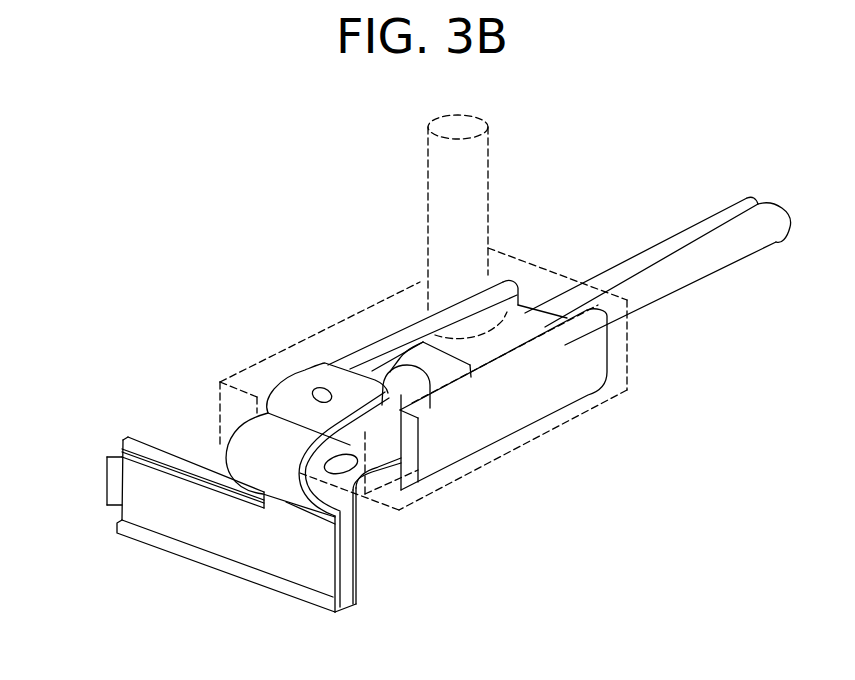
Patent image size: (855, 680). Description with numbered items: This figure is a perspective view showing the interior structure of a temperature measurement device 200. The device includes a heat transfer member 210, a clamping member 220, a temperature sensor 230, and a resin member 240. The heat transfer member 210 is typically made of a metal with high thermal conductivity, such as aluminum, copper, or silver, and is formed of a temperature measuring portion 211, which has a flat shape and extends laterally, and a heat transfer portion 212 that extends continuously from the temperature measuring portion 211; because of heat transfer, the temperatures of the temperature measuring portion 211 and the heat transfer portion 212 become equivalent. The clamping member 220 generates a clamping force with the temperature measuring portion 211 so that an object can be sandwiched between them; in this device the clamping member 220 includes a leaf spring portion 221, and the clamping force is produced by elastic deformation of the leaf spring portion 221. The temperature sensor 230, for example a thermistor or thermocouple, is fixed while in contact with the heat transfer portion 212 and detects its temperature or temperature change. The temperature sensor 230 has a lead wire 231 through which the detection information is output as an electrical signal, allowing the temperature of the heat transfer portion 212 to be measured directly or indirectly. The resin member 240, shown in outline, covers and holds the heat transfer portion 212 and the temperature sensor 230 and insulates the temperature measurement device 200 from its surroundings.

The temperature measurement device 200 is at (465, 662).
The heat transfer member 210 is at (358, 531).
The temperature measuring portion 211 is at (357, 565).
The heat transfer portion 212 is at (468, 426).
The clamping member 220 is at (107, 465).
The leaf spring portion 221 is at (227, 523).
The temperature sensor 230 is at (523, 313).
The lead wire 231 is at (697, 214).
The resin member 240 is at (327, 327).